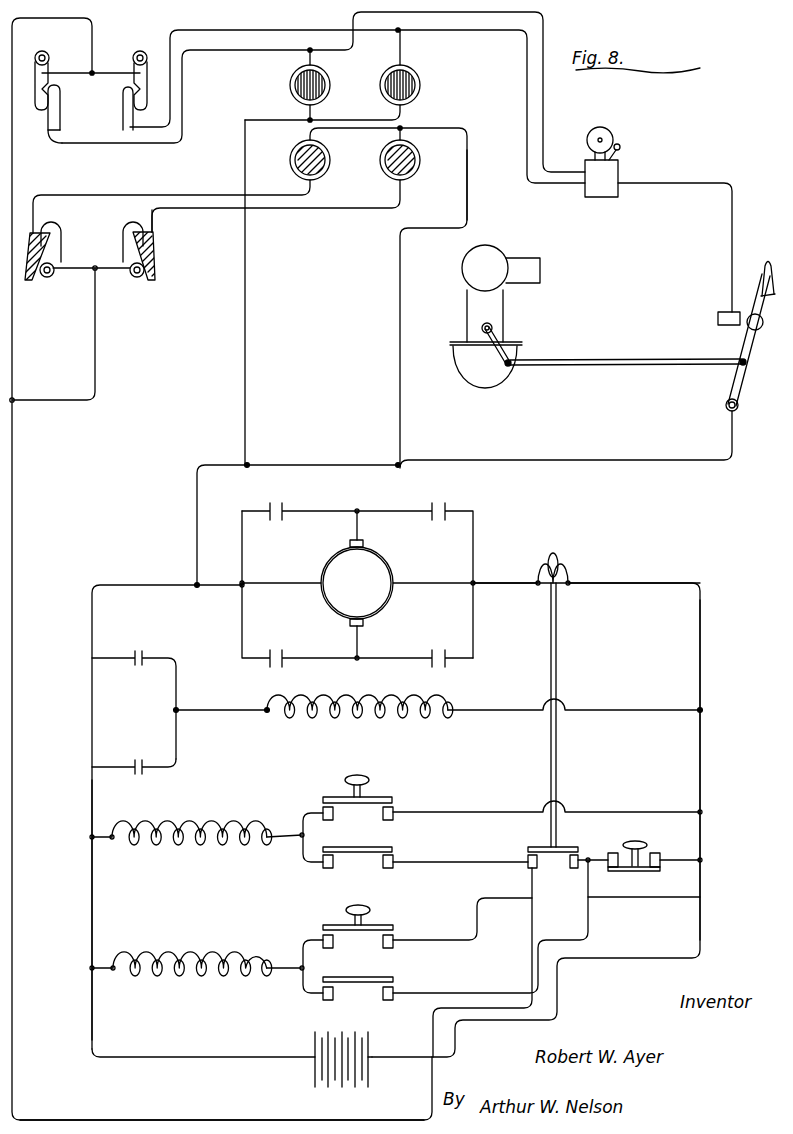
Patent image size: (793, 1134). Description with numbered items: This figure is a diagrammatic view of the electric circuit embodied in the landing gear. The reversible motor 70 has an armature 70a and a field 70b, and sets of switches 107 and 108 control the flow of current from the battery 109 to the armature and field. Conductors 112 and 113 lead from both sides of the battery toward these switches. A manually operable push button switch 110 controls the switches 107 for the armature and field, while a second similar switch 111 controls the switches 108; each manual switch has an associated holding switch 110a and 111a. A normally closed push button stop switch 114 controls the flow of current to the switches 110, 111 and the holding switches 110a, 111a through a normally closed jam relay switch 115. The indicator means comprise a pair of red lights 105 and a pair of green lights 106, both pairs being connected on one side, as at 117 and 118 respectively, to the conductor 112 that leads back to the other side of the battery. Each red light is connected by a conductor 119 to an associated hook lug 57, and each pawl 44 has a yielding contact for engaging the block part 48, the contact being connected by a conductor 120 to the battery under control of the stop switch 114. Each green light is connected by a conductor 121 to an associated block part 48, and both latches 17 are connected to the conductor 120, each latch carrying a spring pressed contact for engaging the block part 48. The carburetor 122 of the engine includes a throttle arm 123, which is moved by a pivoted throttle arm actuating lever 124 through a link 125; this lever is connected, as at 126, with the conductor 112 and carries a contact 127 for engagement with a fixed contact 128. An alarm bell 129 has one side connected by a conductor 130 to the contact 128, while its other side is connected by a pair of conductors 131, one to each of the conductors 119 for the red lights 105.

The pawl 44 is at (134, 77).
The hook lug 57 is at (122, 103).
The conductor 119 is at (228, 35).
The conductors 131 is at (478, 20).
The connection 117 is at (243, 137).
The red lights 105 is at (380, 78).
The green lights 106 is at (381, 154).
The conductors 121 is at (312, 207).
The connection 118 is at (470, 192).
The bell 129 is at (633, 147).
The conductor 130 is at (726, 178).
The latches 17 is at (122, 242).
The block part 48 is at (168, 242).
The carburetor 122 is at (467, 305).
The throttle arm 123 is at (503, 331).
The link 125 is at (705, 366).
The throttle arm actuating lever 124 is at (745, 345).
The contact 127 is at (763, 331).
The fixed contact 128 is at (718, 318).
The connection 126 is at (732, 430).
The switches 107 is at (280, 494).
The switches 108 is at (440, 494).
The motor 70 is at (313, 563).
The armature 70a is at (357, 583).
The field 70b is at (360, 718).
The manually operable switch 110 is at (341, 785).
The holding switch 110a is at (355, 840).
The manually controlled switch 111 is at (335, 918).
The holding switch 111a is at (356, 969).
The jam relay switch 115 is at (542, 837).
The stop switch 114 is at (660, 838).
The conductor 113 is at (700, 767).
The conductor 112 is at (92, 928).
The battery 109 is at (315, 1065).
The conductor 120 is at (400, 1113).